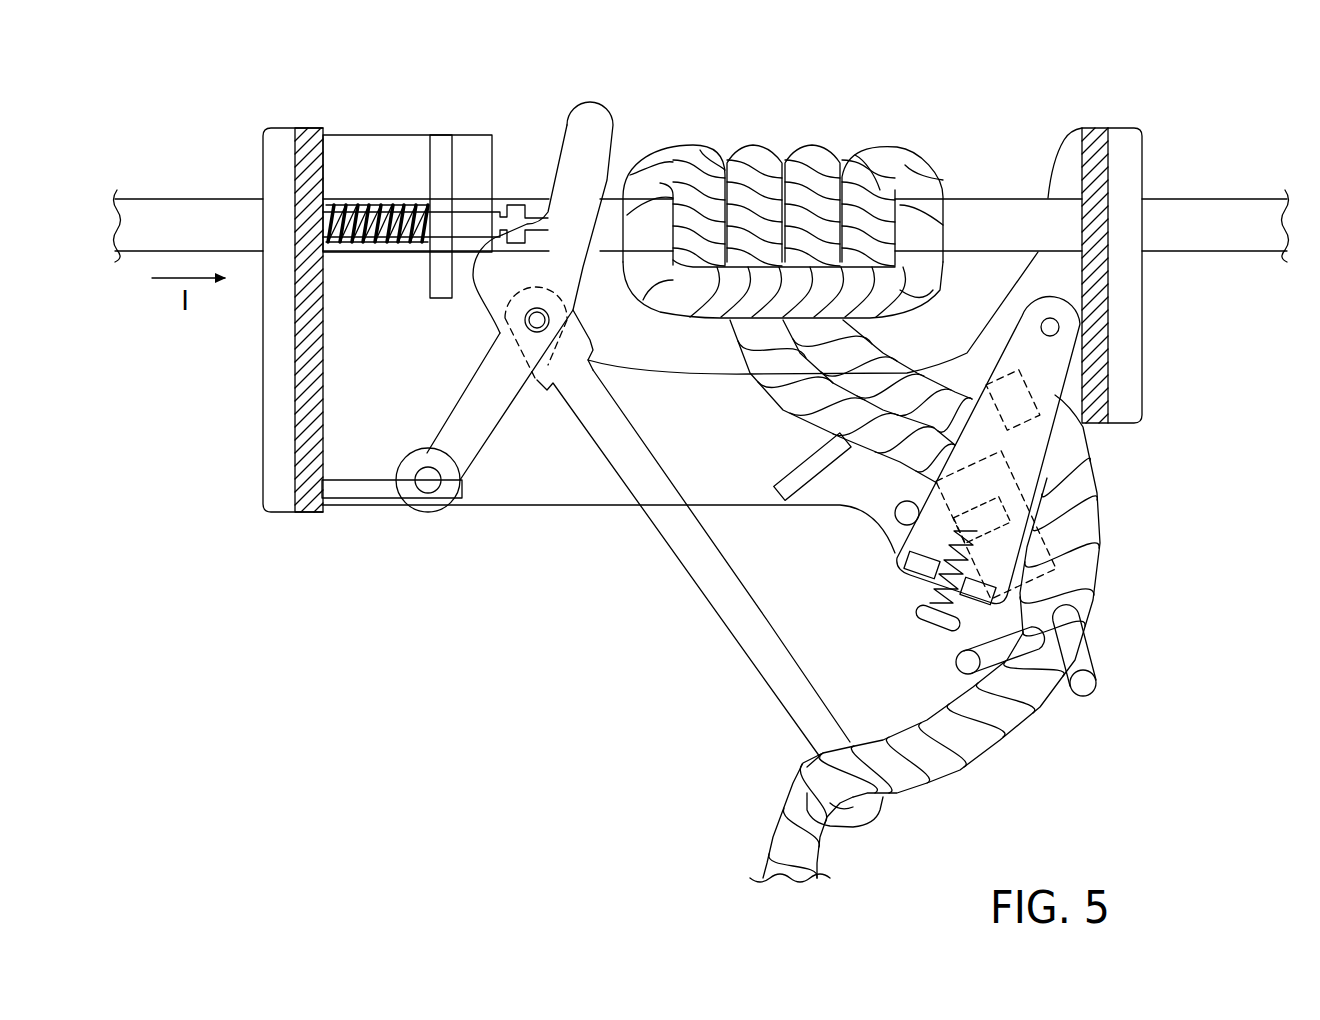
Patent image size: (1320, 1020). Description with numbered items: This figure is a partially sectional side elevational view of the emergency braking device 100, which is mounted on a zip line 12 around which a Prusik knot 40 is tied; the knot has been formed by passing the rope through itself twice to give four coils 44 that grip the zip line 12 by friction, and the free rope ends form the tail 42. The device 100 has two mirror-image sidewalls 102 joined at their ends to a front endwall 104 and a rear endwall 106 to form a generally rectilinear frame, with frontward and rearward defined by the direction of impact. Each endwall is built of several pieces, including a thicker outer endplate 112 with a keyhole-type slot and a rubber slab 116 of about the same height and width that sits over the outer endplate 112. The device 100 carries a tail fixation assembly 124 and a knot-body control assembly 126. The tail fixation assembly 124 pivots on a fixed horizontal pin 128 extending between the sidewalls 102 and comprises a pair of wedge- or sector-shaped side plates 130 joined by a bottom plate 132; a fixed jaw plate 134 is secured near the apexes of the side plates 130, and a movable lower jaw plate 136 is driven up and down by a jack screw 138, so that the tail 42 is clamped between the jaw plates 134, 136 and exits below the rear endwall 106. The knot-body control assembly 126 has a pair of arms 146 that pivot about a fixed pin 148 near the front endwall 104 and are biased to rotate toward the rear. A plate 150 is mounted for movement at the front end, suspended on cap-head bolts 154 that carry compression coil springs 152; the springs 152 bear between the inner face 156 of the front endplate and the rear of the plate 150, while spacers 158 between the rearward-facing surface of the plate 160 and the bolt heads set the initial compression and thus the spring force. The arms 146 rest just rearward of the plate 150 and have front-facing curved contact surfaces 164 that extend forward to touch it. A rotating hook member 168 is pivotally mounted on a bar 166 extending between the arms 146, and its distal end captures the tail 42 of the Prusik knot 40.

The zip line 12 is at (170, 205).
The Prusik knot 40 is at (783, 195).
The tail 42 is at (985, 735).
The rope wraps 44 is at (695, 158).
The device 100 is at (798, 78).
The sidewalls 102 is at (578, 490).
The front endwall 104 is at (285, 318).
The rear endwall 106 is at (1111, 125).
The outer endplate 112 is at (308, 512).
The rubber slab 116 is at (270, 442).
The tail fixation assembly 124 is at (979, 568).
The knot-body control assembly 126 is at (513, 254).
The pin 128 is at (1041, 323).
The side plates 130 is at (979, 469).
The bottom plate 132 is at (917, 565).
The fixed jaw plate 134 is at (1000, 376).
The movable lower jaw plate 136 is at (930, 498).
The jack screw 138 is at (930, 625).
The arms 146 is at (503, 265).
The pin 148 is at (432, 487).
The plate 150 is at (440, 131).
The compression coil springs 152 is at (400, 205).
The cap-head bolts 154 is at (357, 212).
The inner face 156 is at (323, 417).
The spacers 158 is at (483, 215).
The plate 160 is at (453, 167).
The contact surfaces 164 is at (473, 276).
The bar 166 is at (540, 325).
The rotating hook member 168 is at (740, 625).